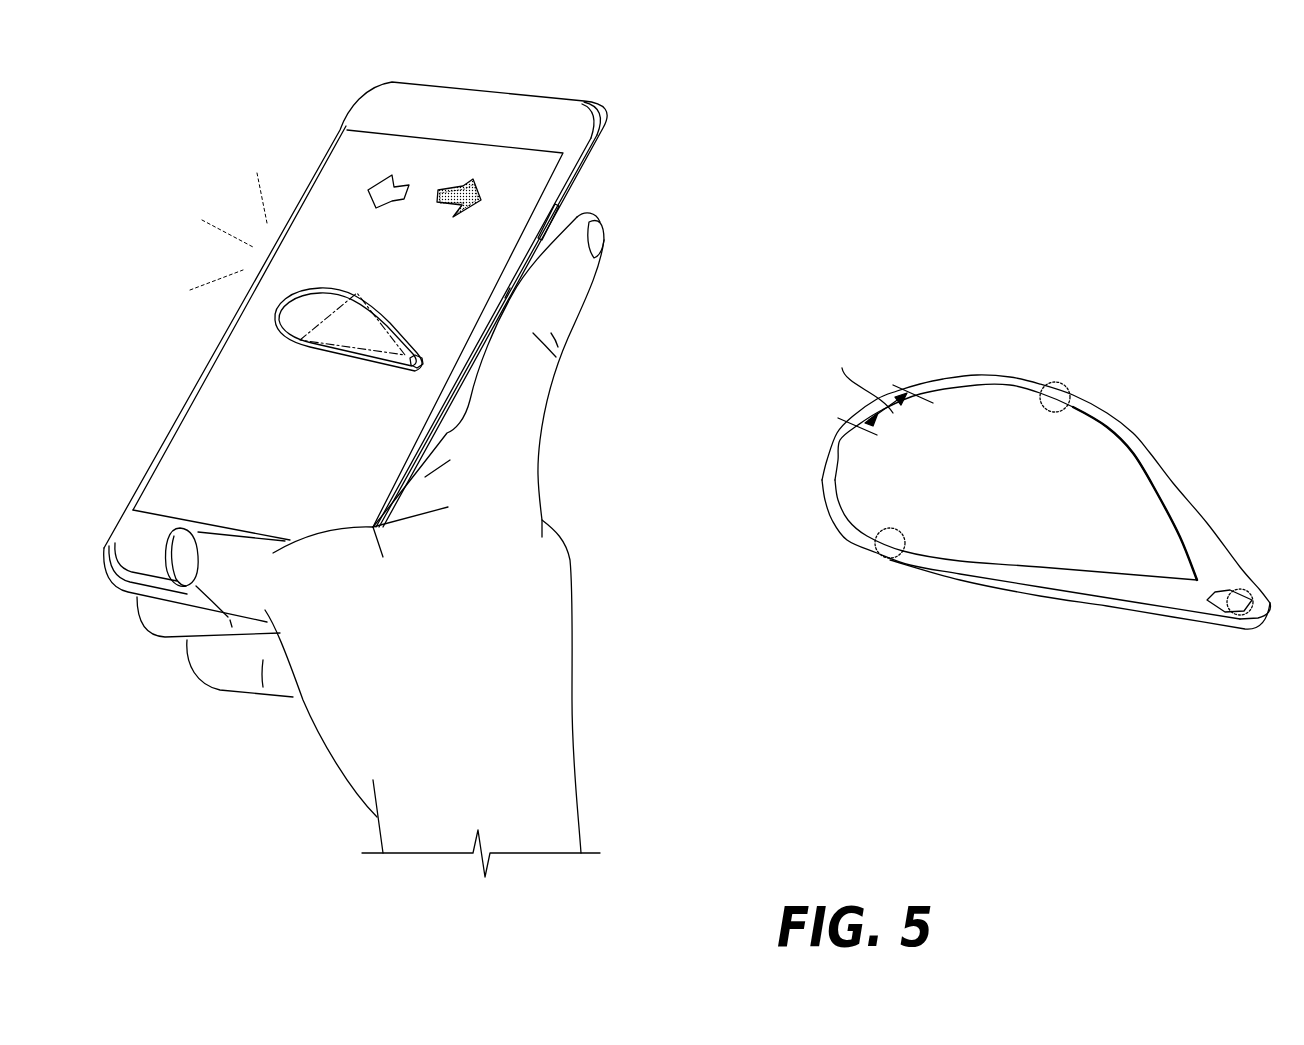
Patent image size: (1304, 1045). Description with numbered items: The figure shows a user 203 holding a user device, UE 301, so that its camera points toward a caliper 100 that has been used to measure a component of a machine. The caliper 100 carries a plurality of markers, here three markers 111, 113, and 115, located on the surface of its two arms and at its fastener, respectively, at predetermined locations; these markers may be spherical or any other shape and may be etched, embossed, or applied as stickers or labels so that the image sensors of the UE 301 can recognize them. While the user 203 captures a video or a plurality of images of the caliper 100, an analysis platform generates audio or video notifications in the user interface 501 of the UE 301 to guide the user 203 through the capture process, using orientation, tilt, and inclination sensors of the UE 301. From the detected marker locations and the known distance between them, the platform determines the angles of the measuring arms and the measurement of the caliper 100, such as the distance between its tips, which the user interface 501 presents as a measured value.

The caliper 100 is at (1150, 457).
The marker 111 is at (1060, 382).
The marker 113 is at (883, 560).
The marker 115 is at (1240, 617).
The user 203 is at (580, 787).
The UE 301 is at (565, 107).
The user interface 501 is at (187, 433).